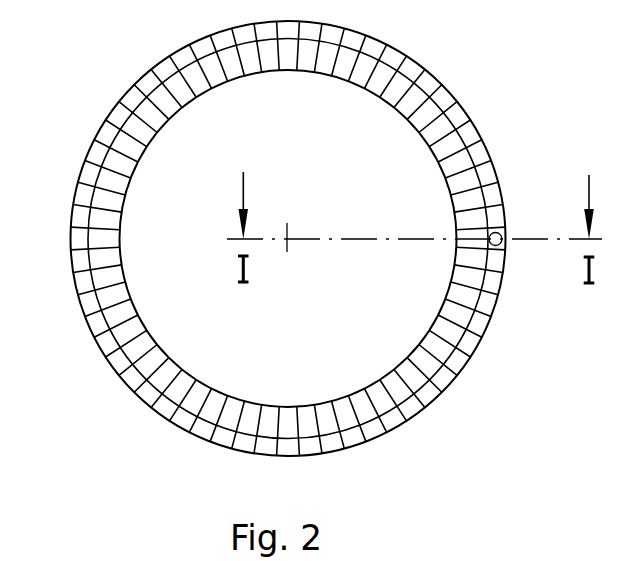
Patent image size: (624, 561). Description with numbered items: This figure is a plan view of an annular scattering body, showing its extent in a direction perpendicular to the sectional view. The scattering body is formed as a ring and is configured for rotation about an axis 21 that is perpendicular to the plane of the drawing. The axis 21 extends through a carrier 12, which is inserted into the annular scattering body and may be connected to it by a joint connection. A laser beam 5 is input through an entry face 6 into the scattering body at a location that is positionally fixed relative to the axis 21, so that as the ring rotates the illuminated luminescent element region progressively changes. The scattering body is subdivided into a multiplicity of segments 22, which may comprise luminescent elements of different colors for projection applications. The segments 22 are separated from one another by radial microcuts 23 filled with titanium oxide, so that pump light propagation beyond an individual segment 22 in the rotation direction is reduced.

The laser beam 5 is at (499, 234).
The entry face 6 is at (428, 83).
The carrier 12 is at (177, 290).
The axis 21 is at (289, 237).
The segments 22 is at (163, 98).
The radial microcuts 23 is at (462, 288).